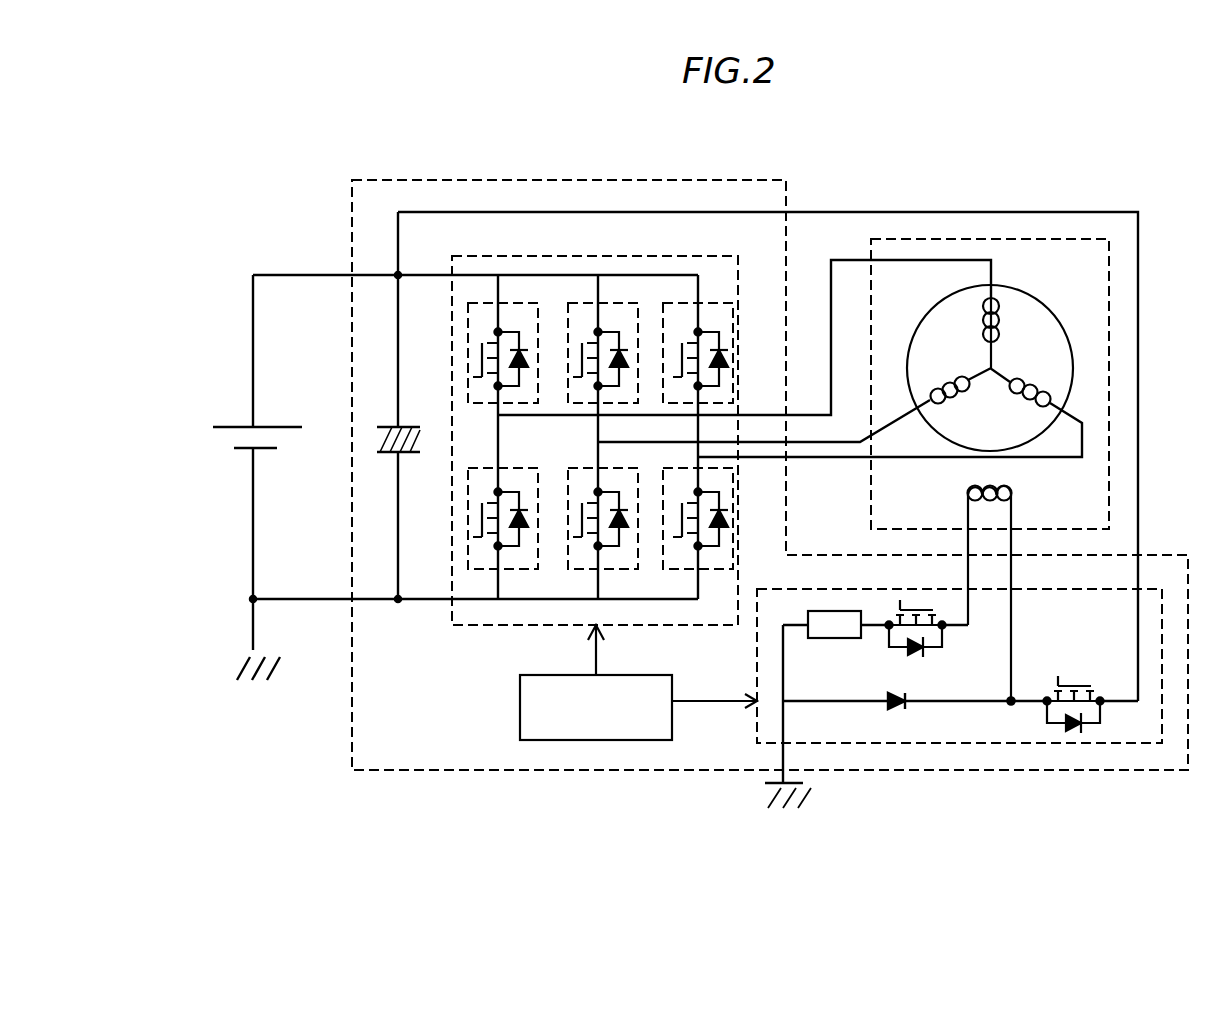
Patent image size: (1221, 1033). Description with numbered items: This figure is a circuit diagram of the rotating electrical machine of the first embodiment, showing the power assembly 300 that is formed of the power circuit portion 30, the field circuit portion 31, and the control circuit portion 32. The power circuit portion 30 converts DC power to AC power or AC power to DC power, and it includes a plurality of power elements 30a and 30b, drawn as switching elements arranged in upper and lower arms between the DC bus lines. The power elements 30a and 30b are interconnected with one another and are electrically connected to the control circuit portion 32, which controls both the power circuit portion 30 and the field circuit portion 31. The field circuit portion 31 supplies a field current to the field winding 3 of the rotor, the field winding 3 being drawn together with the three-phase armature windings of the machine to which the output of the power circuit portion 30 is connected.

The power assembly 300 is at (355, 225).
The power circuit portion 30 is at (610, 258).
The power element 30a is at (522, 302).
The power element 30b is at (482, 570).
The control circuit portion 32 is at (572, 740).
The field winding 3 is at (1013, 493).
The field circuit portion 31 is at (1005, 743).